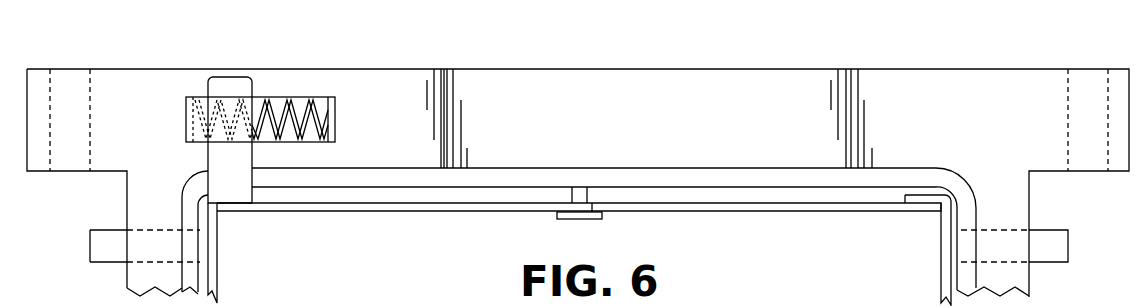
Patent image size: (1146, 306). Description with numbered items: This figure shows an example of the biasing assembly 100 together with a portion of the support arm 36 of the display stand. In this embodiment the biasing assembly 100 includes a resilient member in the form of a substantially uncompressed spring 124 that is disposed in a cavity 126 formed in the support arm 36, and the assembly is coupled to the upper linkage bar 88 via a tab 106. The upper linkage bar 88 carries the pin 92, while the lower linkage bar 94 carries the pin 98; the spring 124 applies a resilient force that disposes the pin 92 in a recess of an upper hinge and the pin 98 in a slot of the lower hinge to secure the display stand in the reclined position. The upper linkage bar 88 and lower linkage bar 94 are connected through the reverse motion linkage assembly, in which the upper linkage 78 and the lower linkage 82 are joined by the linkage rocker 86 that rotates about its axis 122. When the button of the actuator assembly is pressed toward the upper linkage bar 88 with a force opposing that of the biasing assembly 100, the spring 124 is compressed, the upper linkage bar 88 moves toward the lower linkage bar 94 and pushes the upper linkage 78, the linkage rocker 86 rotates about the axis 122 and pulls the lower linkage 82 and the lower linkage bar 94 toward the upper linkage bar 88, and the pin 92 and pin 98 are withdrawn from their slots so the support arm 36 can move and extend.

The support arm 36 is at (717, 86).
The upper linkage 78 is at (400, 212).
The lower linkage 82 is at (745, 212).
The linkage rocker 86 is at (577, 221).
The upper linkage bar 88 is at (218, 254).
The pin 92 is at (90, 247).
The lower linkage bar 94 is at (941, 243).
The pin 98 is at (1068, 246).
The biasing assembly 100 is at (298, 92).
The tab 106 is at (218, 160).
The axis 122 is at (587, 200).
The spring 124 is at (235, 92).
The cavity 126 is at (330, 104).